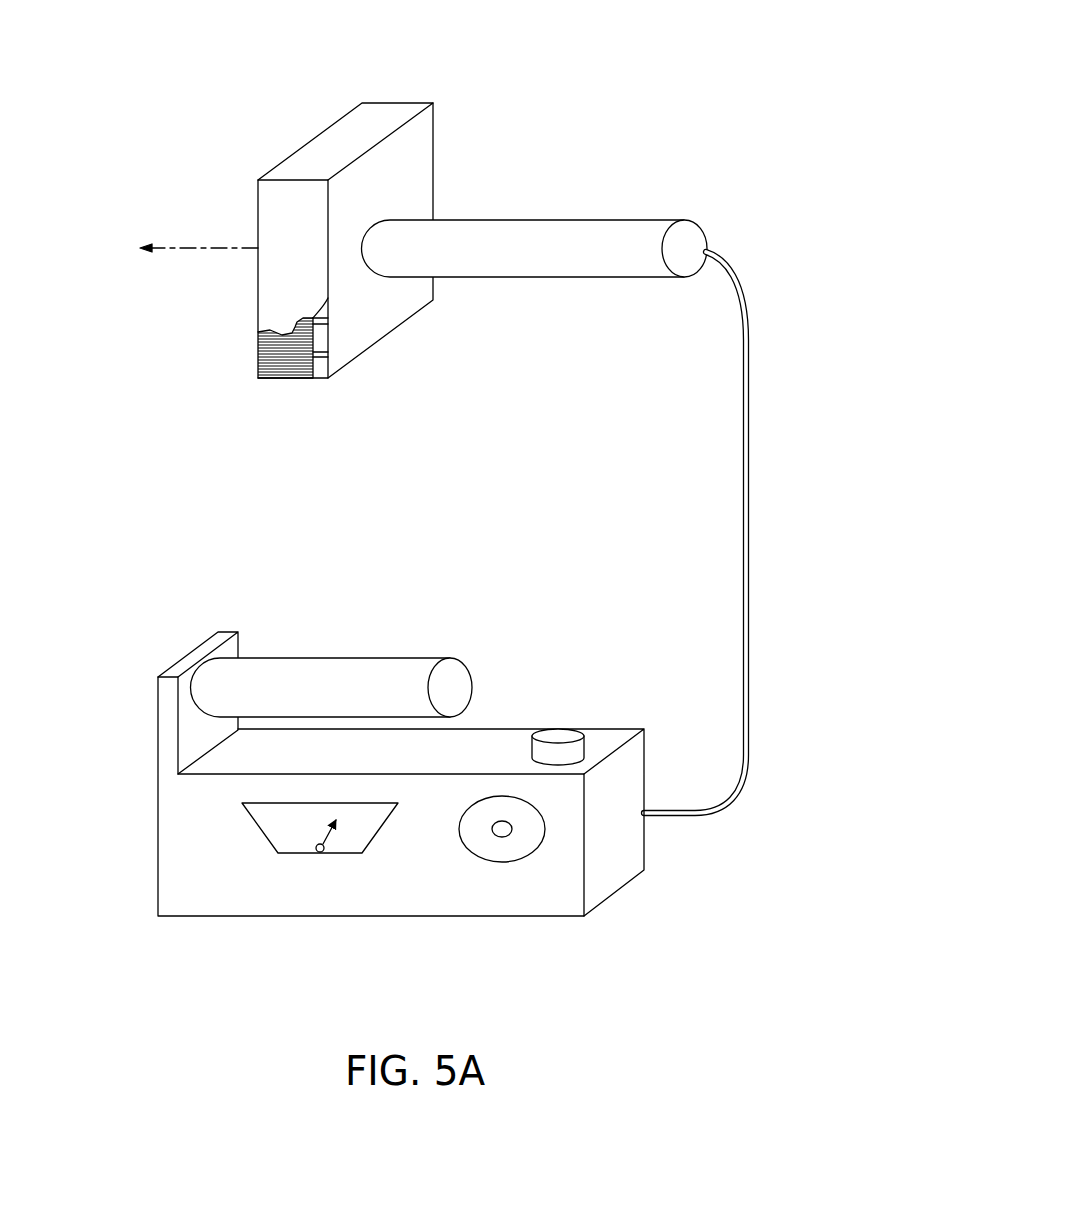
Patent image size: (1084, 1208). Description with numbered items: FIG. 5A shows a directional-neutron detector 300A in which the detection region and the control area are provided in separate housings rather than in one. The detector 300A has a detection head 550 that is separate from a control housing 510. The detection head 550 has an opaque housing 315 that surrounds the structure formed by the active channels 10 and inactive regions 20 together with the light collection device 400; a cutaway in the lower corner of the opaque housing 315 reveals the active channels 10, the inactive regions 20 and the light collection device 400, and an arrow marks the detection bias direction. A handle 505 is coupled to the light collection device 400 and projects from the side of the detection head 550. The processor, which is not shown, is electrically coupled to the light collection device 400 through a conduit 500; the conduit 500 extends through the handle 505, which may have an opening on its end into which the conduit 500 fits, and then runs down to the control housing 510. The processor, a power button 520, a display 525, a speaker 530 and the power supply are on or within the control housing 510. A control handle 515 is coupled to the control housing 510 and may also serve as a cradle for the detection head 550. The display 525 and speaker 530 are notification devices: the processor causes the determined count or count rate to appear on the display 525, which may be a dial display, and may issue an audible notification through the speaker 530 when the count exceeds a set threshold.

The detector 300A is at (670, 78).
The detection head 550 is at (425, 73).
The opaque housing 315 is at (422, 165).
The handle 505 is at (603, 230).
The active channels 10 is at (257, 350).
The inactive regions 20 is at (257, 365).
The light collection device 400 is at (320, 357).
The conduit 500 is at (752, 637).
The control housing 510 is at (250, 758).
The control handle 515 is at (325, 666).
The power button 520 is at (578, 749).
The display 525 is at (300, 844).
The speaker 530 is at (517, 843).